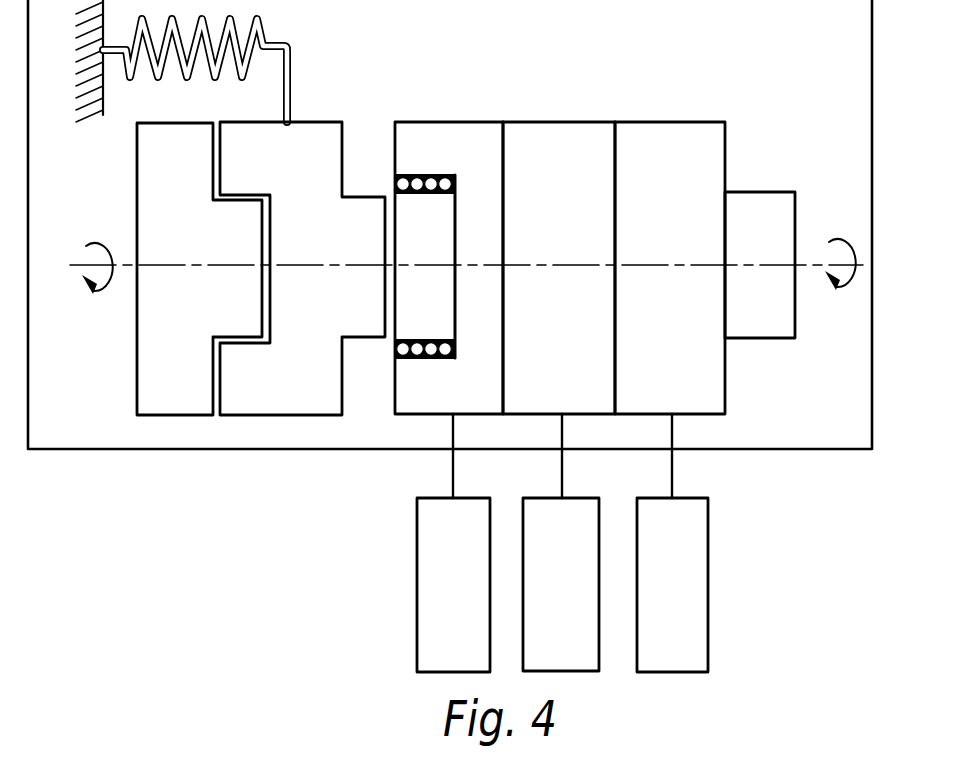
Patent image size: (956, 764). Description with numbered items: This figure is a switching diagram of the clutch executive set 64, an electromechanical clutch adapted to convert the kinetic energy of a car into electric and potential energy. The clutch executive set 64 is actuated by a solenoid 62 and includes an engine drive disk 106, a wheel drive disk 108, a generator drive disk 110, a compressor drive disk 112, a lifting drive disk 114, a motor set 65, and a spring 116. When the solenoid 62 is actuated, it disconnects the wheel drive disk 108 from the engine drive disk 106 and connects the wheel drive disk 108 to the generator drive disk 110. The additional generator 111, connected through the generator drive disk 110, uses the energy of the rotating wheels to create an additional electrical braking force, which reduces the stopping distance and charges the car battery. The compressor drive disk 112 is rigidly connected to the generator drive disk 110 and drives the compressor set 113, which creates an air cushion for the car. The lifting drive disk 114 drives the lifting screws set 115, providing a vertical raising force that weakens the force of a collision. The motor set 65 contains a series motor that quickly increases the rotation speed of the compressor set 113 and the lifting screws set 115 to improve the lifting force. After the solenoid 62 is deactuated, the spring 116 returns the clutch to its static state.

The solenoid 62 is at (423, 358).
The clutch executive set 64 is at (253, 436).
The motor set 65 is at (758, 216).
The engine drive disk 106 is at (178, 343).
The wheel drive disk 108 is at (285, 167).
The generator drive disk 110 is at (413, 148).
The additional generator 111 is at (445, 510).
The compressor drive disk 112 is at (542, 160).
The compressor set 113 is at (562, 522).
The lifting drive disk 114 is at (655, 155).
The lifting screws set 115 is at (670, 523).
The spring 116 is at (277, 44).